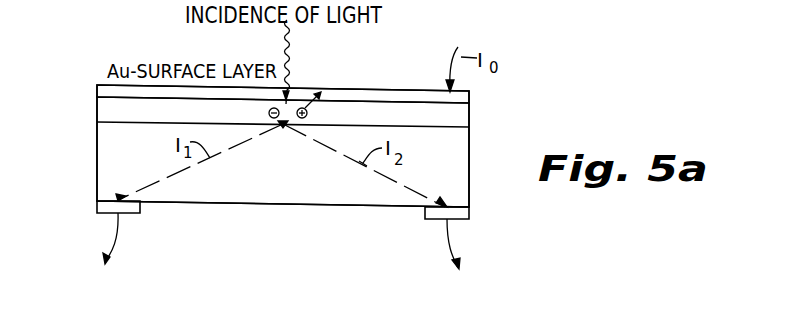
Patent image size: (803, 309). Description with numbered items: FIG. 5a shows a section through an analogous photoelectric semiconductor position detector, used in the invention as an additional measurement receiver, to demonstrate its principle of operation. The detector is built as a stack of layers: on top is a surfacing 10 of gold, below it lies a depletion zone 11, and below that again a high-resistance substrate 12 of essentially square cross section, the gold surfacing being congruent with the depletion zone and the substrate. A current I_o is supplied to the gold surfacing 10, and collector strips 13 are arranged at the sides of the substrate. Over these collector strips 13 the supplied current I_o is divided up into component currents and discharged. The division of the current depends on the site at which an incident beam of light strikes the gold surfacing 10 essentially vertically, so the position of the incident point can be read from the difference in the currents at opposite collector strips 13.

The gold surfacing 10 is at (397, 91).
The depletion zone 11 is at (460, 113).
The high-resistance substrate 12 is at (455, 167).
The collector strips 13 is at (106, 208).